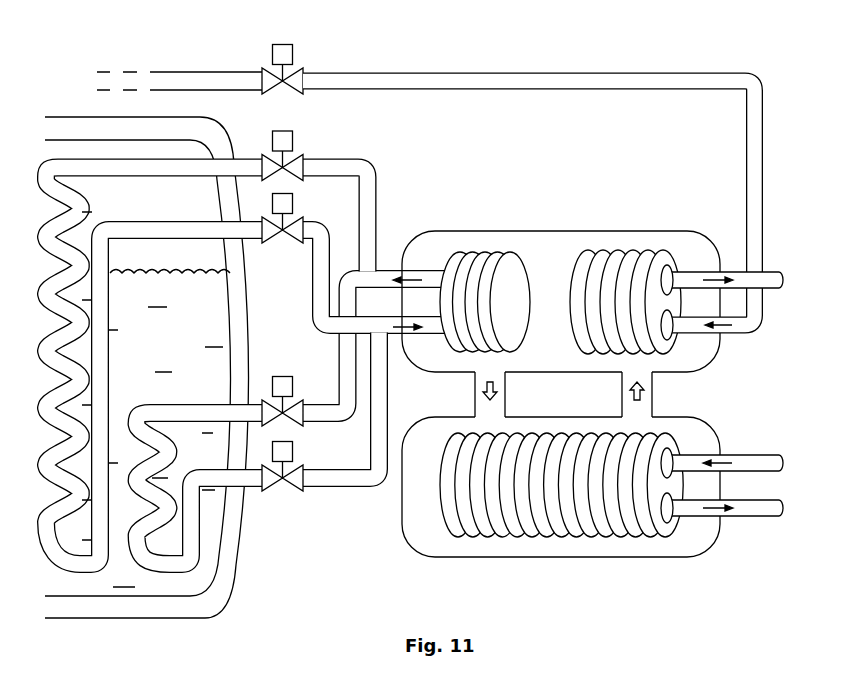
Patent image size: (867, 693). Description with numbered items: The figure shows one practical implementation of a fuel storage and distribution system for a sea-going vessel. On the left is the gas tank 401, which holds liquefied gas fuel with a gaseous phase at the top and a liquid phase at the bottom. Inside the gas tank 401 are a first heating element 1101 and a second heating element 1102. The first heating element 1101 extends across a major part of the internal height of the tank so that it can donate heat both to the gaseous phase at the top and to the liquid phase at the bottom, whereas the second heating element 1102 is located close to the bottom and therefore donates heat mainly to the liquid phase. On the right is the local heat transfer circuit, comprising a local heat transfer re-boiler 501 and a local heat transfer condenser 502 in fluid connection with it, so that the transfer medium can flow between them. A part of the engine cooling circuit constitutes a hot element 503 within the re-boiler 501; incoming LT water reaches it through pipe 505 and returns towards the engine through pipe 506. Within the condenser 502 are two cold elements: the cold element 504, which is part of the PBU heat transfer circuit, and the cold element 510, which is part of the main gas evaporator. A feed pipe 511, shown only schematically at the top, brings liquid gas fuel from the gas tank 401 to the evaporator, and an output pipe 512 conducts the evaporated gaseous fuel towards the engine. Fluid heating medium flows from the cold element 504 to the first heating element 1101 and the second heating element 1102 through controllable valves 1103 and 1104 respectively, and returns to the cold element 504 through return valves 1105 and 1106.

The gas tank 401 is at (226, 598).
The local heat transfer re-boiler 501 is at (408, 536).
The local heat transfer condenser 502 is at (558, 232).
The hot element 503 is at (447, 533).
The cold element 504 is at (494, 262).
The pipe 505 is at (752, 455).
The pipe 506 is at (745, 519).
The cold element 510 is at (630, 256).
The feed pipe 511 is at (497, 92).
The output pipe 512 is at (771, 272).
The first heating element 1101 is at (79, 210).
The second heating element 1102 is at (149, 406).
The controllable valve 1103 is at (293, 167).
The controllable valve 1104 is at (262, 398).
The return valve 1105 is at (270, 243).
The return valve 1106 is at (270, 490).